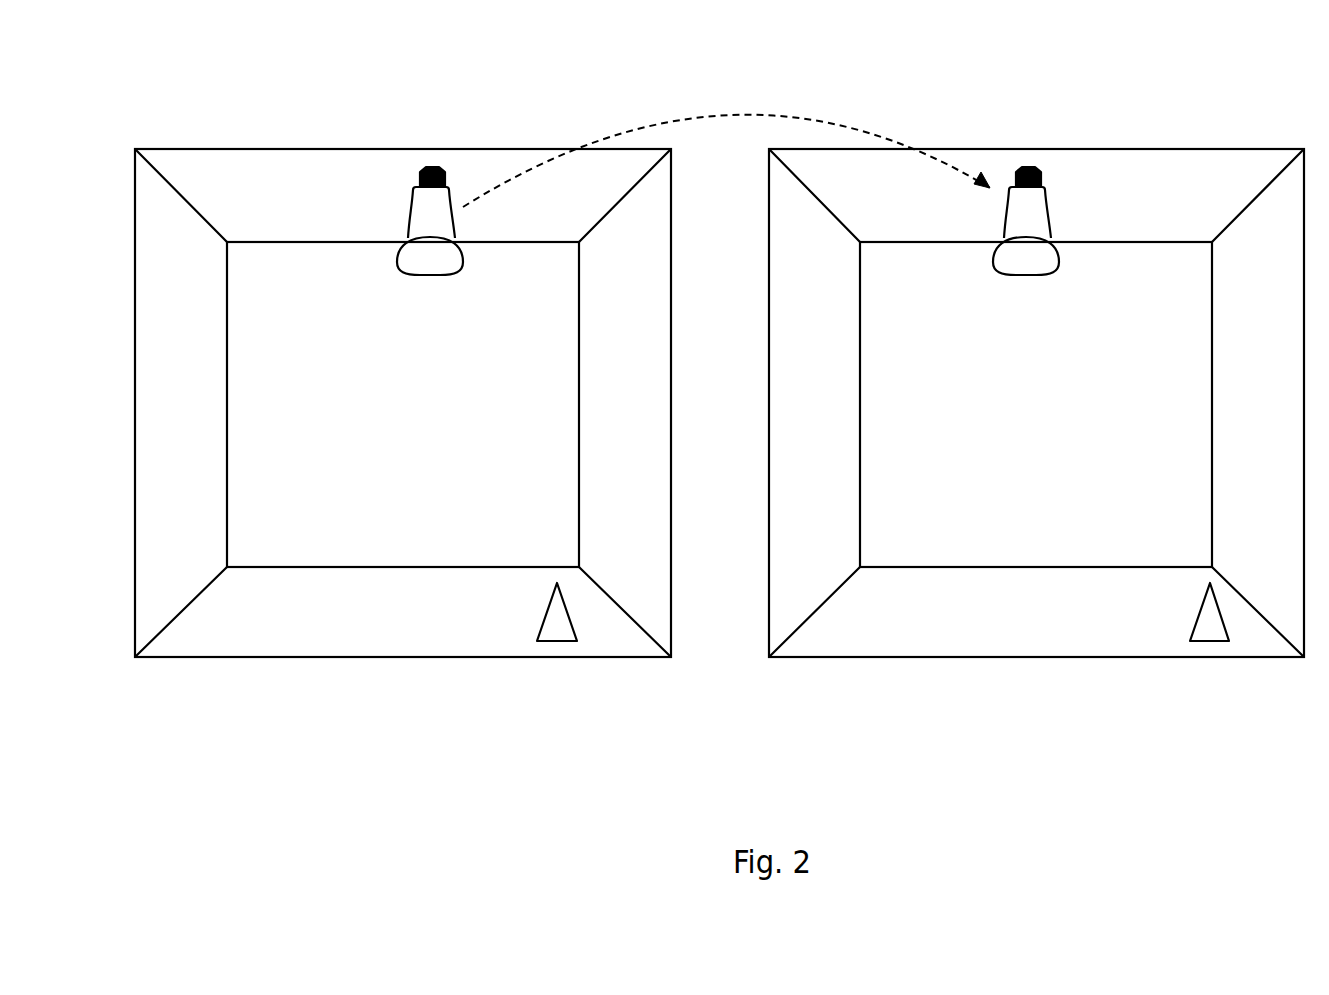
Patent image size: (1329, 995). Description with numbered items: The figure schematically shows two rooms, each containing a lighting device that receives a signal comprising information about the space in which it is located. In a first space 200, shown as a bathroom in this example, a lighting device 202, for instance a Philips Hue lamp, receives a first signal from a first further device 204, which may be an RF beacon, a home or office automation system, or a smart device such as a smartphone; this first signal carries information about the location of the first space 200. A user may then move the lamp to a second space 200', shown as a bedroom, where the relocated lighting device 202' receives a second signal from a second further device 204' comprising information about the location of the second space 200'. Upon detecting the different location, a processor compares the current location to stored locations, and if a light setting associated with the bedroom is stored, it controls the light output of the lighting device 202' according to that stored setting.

The first space 200 is at (403, 353).
The second space 200' is at (1036, 353).
The lighting device 202 is at (378, 221).
The lighting device 202' is at (1084, 221).
The first further device 204 is at (503, 612).
The second further device 204' is at (1154, 612).